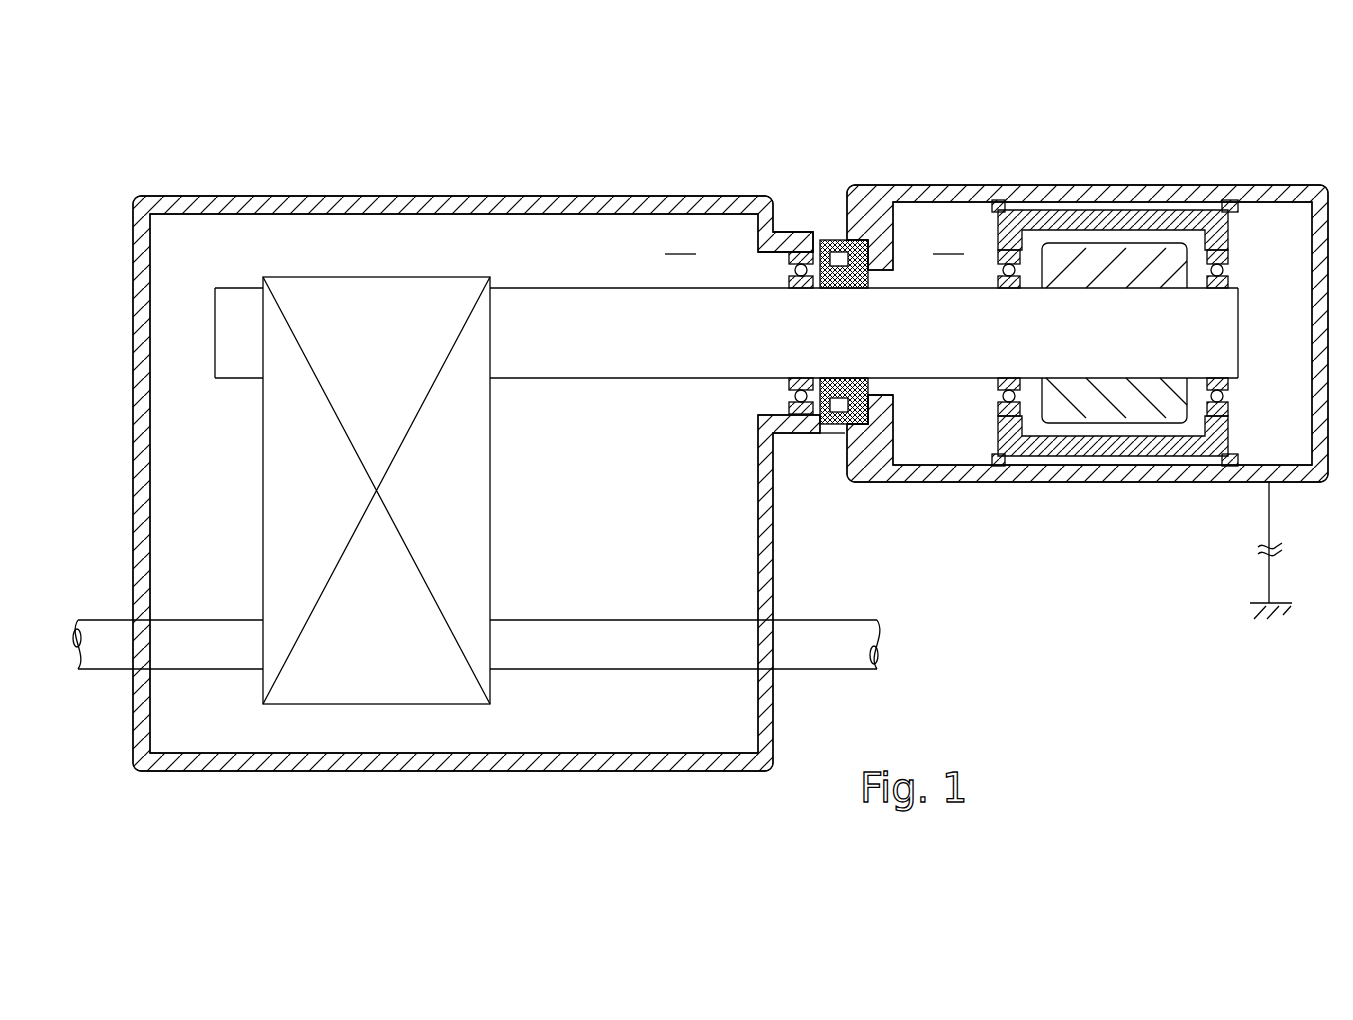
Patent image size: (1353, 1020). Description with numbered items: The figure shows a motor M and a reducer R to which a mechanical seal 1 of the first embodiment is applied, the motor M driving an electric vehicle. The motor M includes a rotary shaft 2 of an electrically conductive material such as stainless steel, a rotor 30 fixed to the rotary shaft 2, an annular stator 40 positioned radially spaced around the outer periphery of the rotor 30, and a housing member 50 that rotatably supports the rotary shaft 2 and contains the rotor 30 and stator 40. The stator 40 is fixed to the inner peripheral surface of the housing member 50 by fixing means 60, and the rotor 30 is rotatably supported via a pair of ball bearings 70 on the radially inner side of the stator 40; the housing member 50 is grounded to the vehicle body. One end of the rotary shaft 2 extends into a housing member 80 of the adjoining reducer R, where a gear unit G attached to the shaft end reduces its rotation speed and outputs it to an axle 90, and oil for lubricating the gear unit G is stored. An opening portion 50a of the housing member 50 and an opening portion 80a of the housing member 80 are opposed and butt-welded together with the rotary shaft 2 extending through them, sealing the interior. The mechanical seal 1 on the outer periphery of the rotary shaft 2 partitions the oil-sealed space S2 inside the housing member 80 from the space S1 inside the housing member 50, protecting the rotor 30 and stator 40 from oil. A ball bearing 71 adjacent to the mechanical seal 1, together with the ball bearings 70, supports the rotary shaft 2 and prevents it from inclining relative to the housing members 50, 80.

The mechanical seal 1 is at (857, 241).
The rotary shaft 2 is at (1201, 305).
The rotor 30 is at (1085, 412).
The stator 40 is at (1104, 458).
The housing member 50 is at (1075, 186).
The opening portion 50a is at (851, 426).
The fixing means 60 is at (1231, 468).
The ball bearings 70 is at (1005, 420).
The ball bearing 71 is at (800, 250).
The housing member 80 is at (542, 196).
The opening portion 80a is at (818, 240).
The axle 90 is at (100, 633).
The gear unit G is at (368, 278).
The reducer R is at (432, 197).
The motor M is at (1160, 178).
The space S1 is at (949, 241).
The space S2 is at (681, 241).